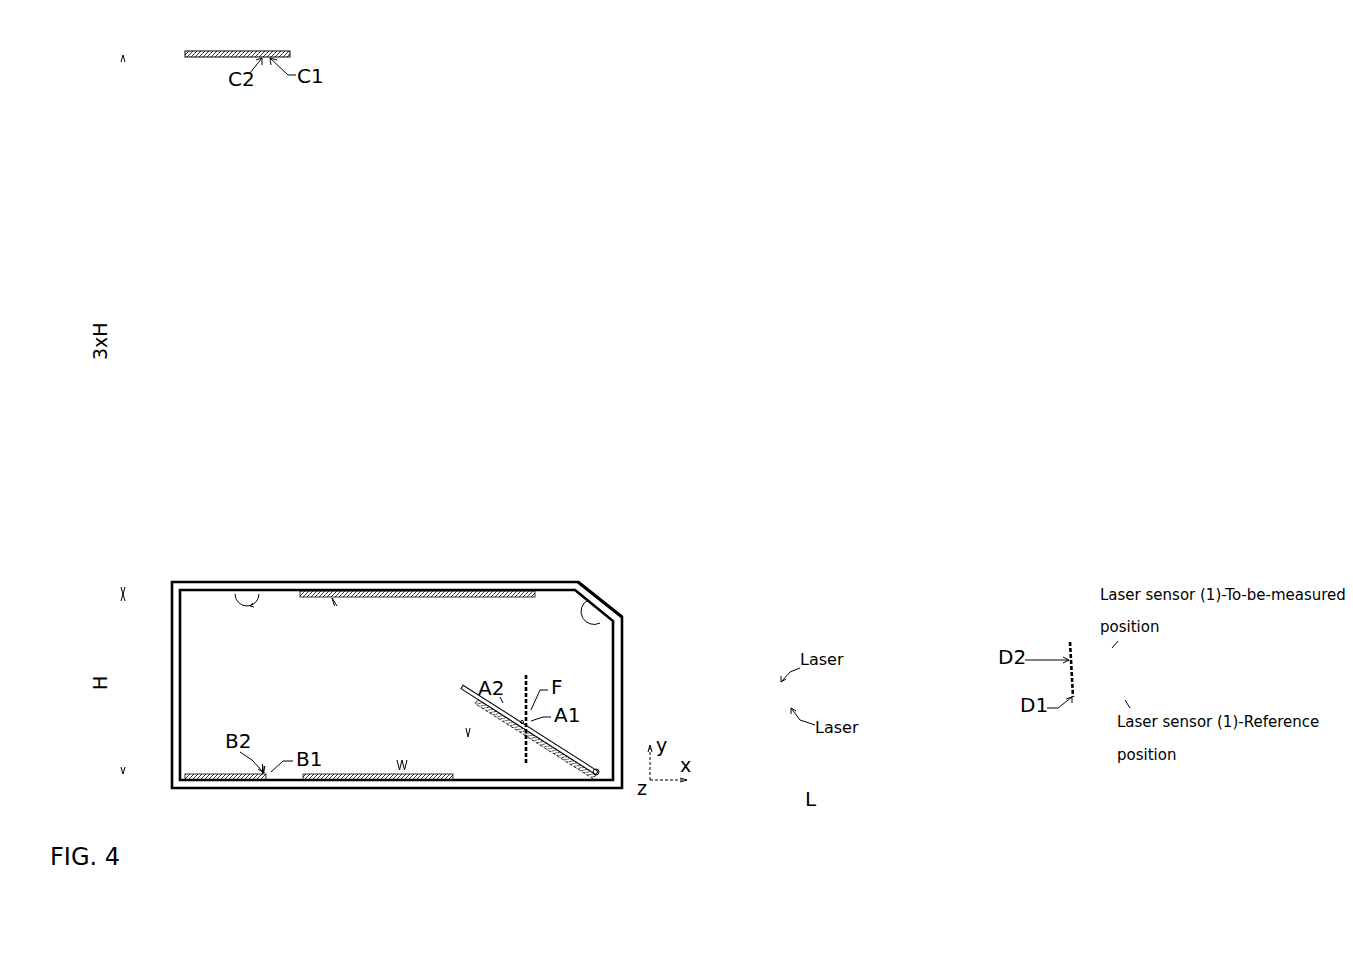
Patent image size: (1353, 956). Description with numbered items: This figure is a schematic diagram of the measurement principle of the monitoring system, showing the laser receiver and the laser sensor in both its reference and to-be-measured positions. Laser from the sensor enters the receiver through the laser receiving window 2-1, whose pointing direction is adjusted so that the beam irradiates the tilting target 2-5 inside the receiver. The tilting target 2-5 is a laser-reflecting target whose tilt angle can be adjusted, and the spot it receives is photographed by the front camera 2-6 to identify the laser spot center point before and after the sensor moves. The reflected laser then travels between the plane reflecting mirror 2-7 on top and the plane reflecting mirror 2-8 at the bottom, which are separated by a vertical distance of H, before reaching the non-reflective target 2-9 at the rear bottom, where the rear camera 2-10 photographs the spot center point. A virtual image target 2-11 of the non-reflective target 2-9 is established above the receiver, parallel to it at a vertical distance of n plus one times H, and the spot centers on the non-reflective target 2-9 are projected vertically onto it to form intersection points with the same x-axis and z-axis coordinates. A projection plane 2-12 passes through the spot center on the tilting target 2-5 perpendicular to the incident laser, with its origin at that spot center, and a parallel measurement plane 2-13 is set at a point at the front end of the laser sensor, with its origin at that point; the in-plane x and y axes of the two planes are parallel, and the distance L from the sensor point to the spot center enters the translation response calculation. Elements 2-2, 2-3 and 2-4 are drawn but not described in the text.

The laser receiving window 2-1 is at (631, 682).
The laser emitting point 2-2 is at (520, 730).
The rotating shaft 2-3 is at (592, 772).
The vertical reference screen 2-4 is at (468, 728).
The tilting target 2-5 is at (548, 731).
The front camera 2-6 is at (588, 618).
The plane reflecting mirror 2-7 is at (377, 602).
The plane reflecting mirror 2-8 is at (335, 772).
The non-reflective target 2-9 is at (228, 766).
The rear camera 2-10 is at (250, 607).
The virtual image target 2-11 is at (249, 54).
The projection plane 2-12 is at (531, 678).
The measurement plane 2-13 is at (1069, 645).